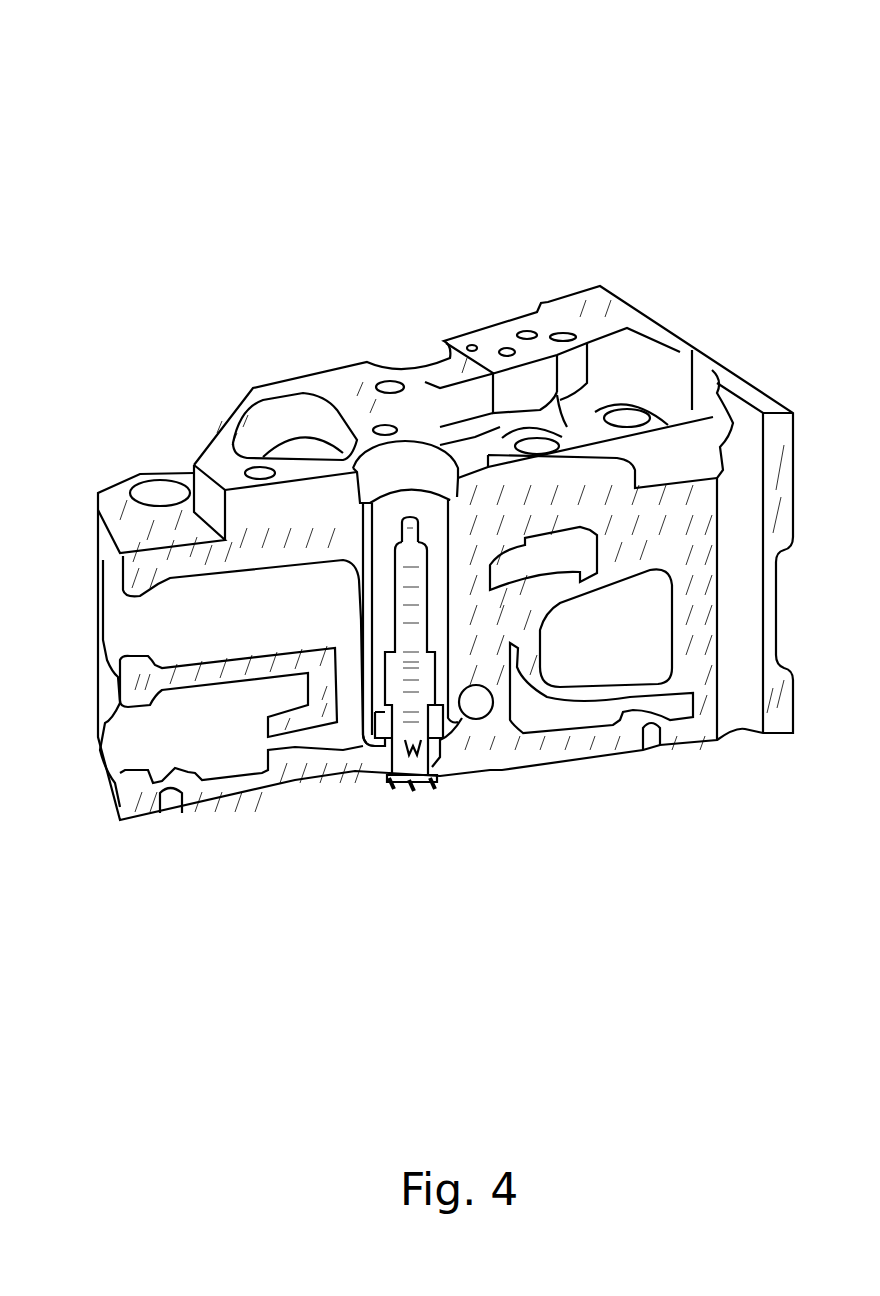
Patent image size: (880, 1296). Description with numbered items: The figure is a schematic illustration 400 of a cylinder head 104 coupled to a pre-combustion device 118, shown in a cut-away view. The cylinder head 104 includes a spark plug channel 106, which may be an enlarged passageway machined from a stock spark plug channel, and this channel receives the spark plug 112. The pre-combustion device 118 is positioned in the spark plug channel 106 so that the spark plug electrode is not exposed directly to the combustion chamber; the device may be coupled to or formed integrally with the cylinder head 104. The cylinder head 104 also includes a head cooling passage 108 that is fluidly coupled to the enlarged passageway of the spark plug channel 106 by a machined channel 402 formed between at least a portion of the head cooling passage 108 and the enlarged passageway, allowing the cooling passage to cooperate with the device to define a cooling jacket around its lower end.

The cylinder head assembly 400 is at (113, 67).
The cylinder head 104 is at (480, 505).
The spark plug channel 106 is at (400, 455).
The head cooling passage 108 is at (481, 711).
The spark plug 112 is at (405, 637).
The pre-combustion device 118 is at (432, 790).
The machined channel 402 is at (370, 752).